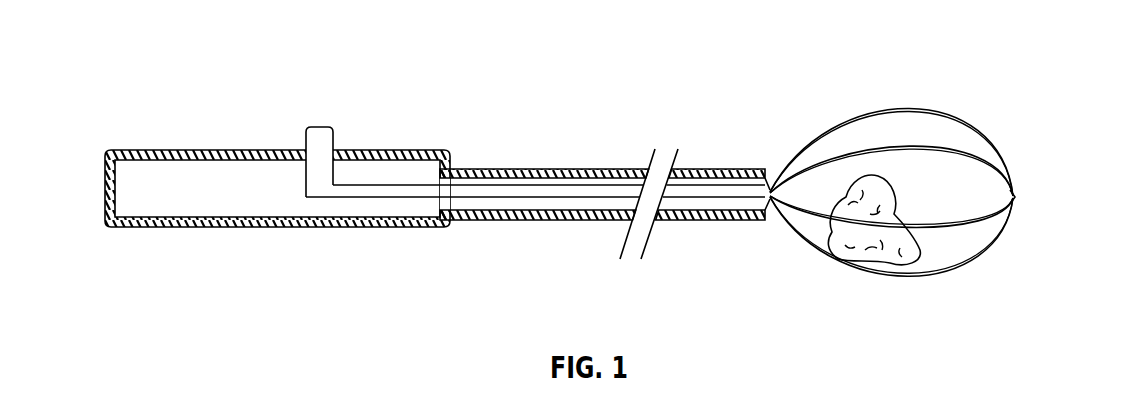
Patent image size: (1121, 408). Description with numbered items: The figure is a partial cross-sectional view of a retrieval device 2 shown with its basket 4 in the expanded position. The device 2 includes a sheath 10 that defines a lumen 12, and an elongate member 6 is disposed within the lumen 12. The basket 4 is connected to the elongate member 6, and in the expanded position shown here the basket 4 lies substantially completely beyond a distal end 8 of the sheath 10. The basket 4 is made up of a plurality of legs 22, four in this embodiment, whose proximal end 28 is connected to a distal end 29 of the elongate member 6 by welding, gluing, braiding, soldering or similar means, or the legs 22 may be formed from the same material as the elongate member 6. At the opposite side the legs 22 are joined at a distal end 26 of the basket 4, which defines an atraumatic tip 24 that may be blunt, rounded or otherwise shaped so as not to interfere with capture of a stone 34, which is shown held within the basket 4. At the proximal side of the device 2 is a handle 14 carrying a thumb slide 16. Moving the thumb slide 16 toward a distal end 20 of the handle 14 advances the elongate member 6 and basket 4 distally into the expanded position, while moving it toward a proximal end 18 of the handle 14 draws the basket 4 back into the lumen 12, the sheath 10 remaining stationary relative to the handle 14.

The retrieval device 2 is at (508, 110).
The basket 4 is at (907, 203).
The elongate member 6 is at (547, 221).
The distal end of the sheath 8 is at (752, 147).
The sheath 10 is at (510, 169).
The lumen 12 is at (558, 199).
The handle 14 is at (122, 150).
The thumb slide 16 is at (335, 140).
The proximal end of the handle 18 is at (122, 247).
The distal end of the handle 20 is at (432, 247).
The legs 22 is at (980, 128).
The atraumatic tip 24 is at (1018, 196).
The distal end of the basket 26 is at (1013, 244).
The proximal end of the basket 28 is at (784, 240).
The distal end of the elongate member 29 is at (769, 165).
The stone 34 is at (888, 260).